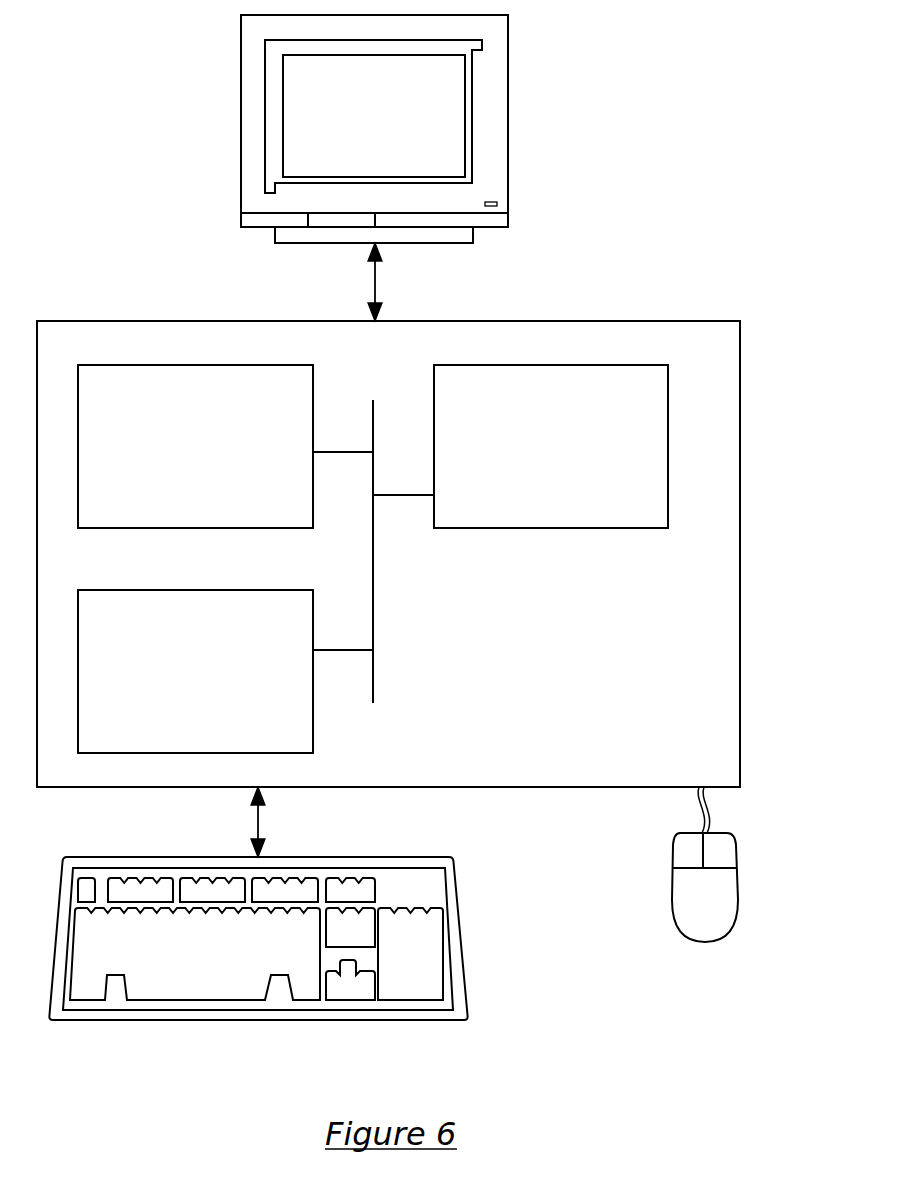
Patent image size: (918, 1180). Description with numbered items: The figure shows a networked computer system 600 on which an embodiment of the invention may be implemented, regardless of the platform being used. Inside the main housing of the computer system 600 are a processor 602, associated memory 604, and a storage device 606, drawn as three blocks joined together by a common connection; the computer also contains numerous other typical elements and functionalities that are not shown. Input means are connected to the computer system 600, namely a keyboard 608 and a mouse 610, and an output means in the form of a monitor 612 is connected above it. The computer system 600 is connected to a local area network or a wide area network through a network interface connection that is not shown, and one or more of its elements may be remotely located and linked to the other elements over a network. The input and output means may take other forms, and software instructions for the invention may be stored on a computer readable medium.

The networked computer system 600 is at (716, 201).
The processor 602 is at (577, 450).
The memory 604 is at (218, 460).
The storage device 606 is at (215, 685).
The keyboard 608 is at (210, 978).
The mouse 610 is at (723, 911).
The monitor 612 is at (395, 131).